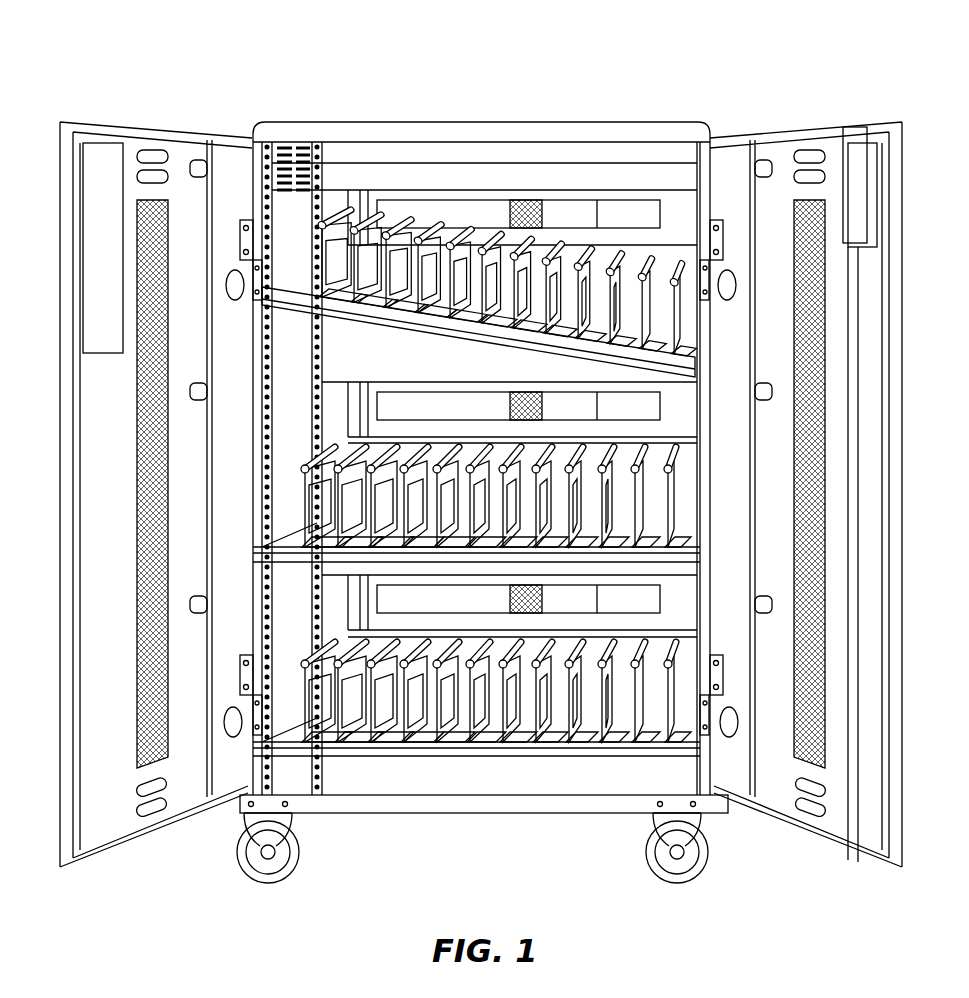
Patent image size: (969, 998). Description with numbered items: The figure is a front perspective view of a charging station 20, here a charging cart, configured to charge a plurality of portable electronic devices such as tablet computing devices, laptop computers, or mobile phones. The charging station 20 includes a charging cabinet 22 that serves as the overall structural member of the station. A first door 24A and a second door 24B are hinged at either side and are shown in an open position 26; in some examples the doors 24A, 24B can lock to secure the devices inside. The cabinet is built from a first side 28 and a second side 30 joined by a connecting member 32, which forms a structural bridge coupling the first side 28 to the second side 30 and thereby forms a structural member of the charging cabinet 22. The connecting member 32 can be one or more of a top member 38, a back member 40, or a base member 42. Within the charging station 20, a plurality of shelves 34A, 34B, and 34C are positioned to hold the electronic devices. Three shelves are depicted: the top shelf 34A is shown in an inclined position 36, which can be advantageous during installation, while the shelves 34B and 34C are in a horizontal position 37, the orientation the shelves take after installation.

The charging station 20 is at (668, 60).
The charging cabinet 22 is at (291, 131).
The first door 24A is at (113, 817).
The second door 24B is at (777, 793).
The open position 26 is at (424, 822).
The first side 28 is at (284, 404).
The second side 30 is at (700, 409).
The connecting member 32 is at (485, 122).
The top shelf 34A is at (310, 313).
The shelf 34B is at (312, 564).
The shelf 34C is at (346, 752).
The inclined position 36 is at (378, 343).
The horizontal position 37 is at (560, 758).
The top member 38 is at (596, 130).
The back member 40 is at (445, 373).
The base member 42 is at (560, 810).